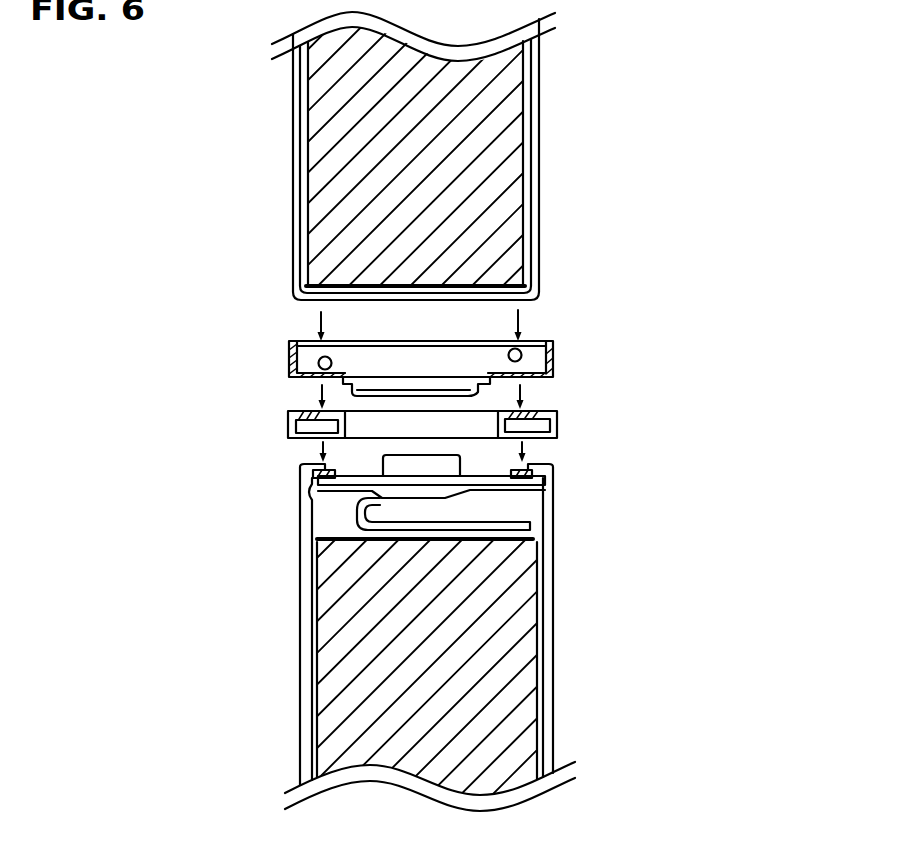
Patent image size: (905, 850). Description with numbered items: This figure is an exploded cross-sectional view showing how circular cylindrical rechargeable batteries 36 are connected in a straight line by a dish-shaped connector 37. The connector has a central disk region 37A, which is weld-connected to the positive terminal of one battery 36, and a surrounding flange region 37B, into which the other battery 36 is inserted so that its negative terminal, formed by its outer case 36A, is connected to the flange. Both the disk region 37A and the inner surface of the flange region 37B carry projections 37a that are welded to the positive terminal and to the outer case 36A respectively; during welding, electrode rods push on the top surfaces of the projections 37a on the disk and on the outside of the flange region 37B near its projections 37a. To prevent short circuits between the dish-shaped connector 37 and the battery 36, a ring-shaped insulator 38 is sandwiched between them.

The rechargeable battery 36 is at (556, 128).
The outer case 36A is at (540, 205).
The dish-shaped connector 37 is at (586, 378).
The disk region 37A is at (590, 478).
The flange region 37B is at (555, 358).
The projections 37a is at (585, 292).
The ring-shaped insulator 38 is at (560, 417).